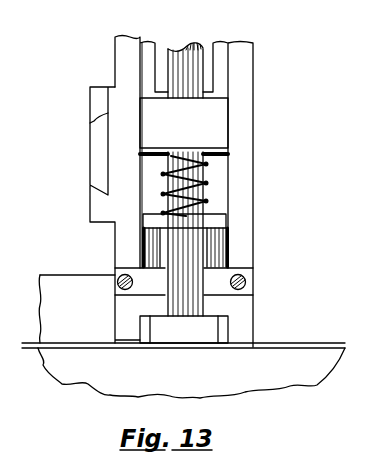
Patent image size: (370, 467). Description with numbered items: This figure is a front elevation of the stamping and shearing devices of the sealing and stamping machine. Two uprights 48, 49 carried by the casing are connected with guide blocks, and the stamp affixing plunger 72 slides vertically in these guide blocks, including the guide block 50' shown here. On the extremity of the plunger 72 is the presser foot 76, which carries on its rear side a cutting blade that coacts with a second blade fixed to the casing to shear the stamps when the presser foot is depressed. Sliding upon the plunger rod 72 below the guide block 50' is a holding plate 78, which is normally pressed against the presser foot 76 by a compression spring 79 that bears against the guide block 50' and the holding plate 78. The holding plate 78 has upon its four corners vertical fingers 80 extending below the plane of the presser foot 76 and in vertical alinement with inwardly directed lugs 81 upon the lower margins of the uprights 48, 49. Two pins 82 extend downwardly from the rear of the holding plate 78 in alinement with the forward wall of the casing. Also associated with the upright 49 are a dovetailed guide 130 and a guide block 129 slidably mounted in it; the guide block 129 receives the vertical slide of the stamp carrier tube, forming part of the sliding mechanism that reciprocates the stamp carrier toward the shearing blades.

The upright 48 is at (254, 60).
The upright 49 is at (116, 48).
The guide block 50' is at (220, 123).
The stamp affixing plunger 72 is at (199, 44).
The presser foot 76 is at (223, 328).
The holding plate 78 is at (227, 217).
The compression spring 79 is at (207, 183).
The vertical fingers 80 is at (229, 247).
The inwardly directed lugs 81 is at (234, 266).
The pins 82 is at (218, 237).
The guide block 129 is at (93, 129).
The dovetailed guide 130 is at (90, 96).